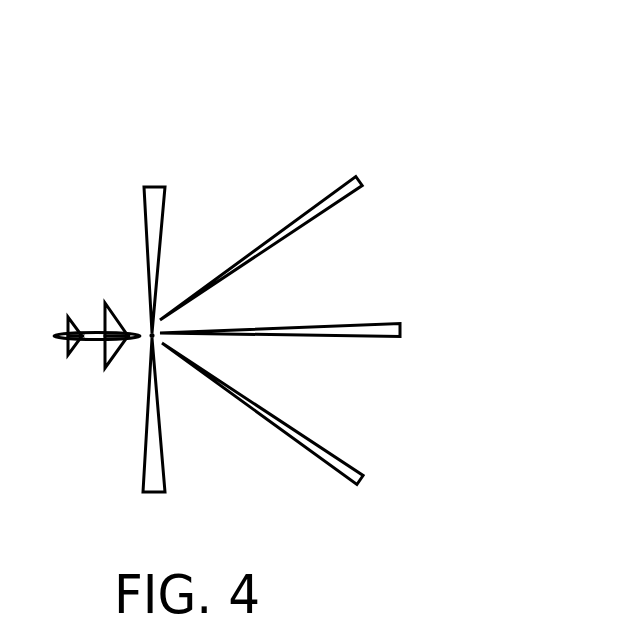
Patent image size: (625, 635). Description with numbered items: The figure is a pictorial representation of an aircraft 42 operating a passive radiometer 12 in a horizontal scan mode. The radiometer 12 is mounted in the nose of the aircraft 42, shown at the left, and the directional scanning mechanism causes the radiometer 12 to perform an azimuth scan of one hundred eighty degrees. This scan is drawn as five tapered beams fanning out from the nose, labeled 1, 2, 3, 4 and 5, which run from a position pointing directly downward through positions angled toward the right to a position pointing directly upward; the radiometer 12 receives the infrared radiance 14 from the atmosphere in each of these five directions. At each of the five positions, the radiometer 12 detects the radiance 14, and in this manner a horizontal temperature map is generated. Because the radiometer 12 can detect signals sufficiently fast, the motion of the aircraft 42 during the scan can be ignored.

The radiation 14 is at (280, 100).
The radiometer 12 is at (140, 338).
The aircraft 42 is at (77, 332).
The beam 1 is at (157, 445).
The beam 2 is at (282, 431).
The beam 3 is at (299, 330).
The beam 4 is at (285, 235).
The beam 5 is at (146, 215).